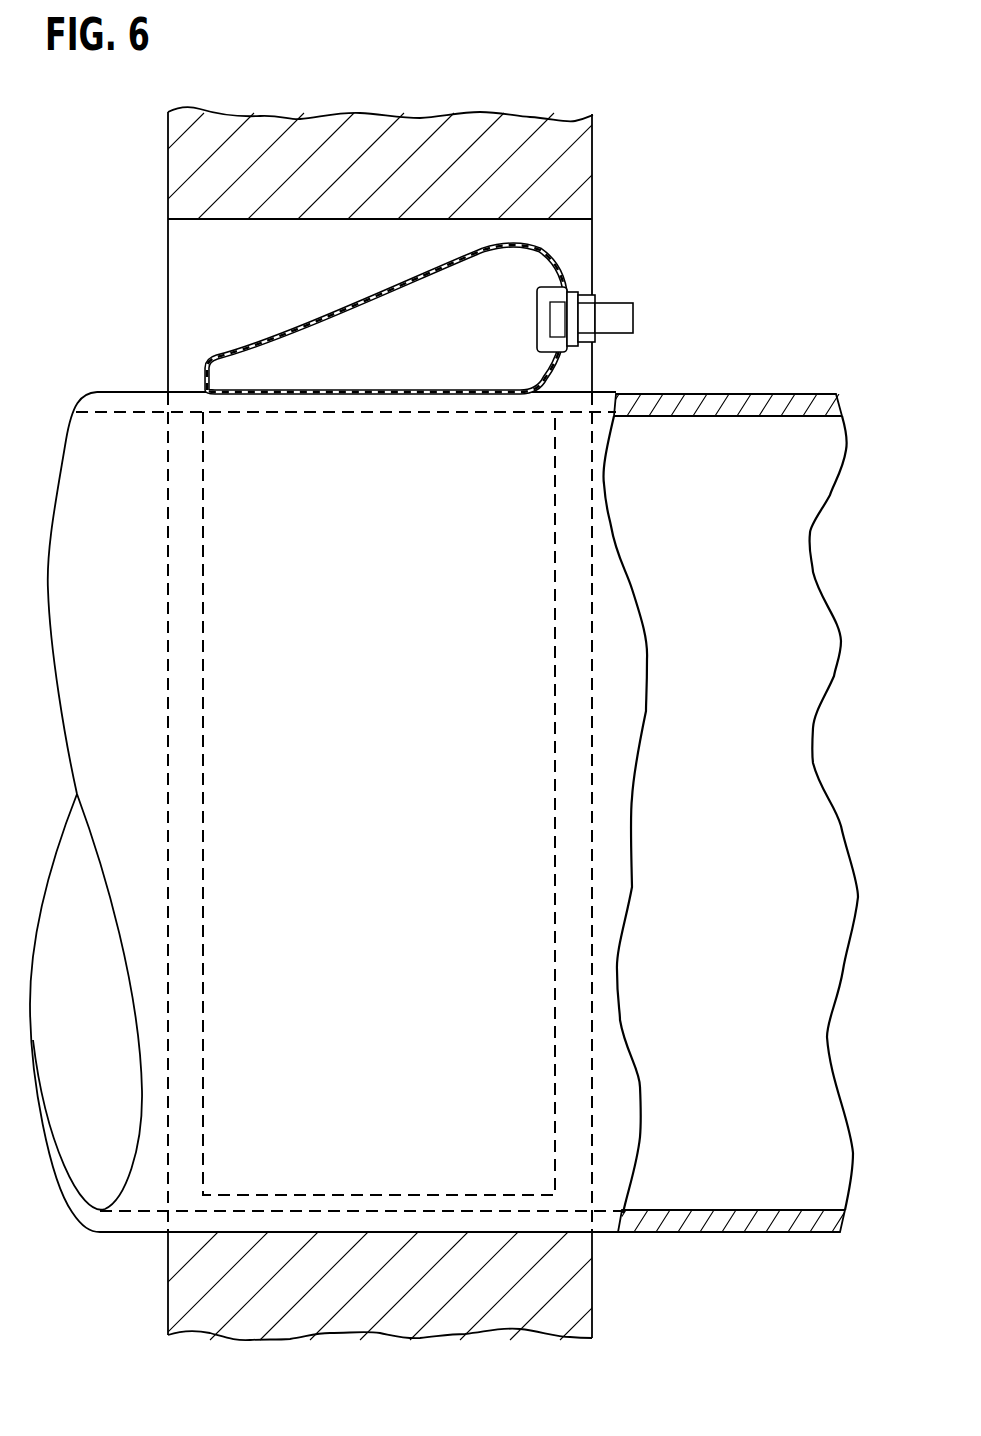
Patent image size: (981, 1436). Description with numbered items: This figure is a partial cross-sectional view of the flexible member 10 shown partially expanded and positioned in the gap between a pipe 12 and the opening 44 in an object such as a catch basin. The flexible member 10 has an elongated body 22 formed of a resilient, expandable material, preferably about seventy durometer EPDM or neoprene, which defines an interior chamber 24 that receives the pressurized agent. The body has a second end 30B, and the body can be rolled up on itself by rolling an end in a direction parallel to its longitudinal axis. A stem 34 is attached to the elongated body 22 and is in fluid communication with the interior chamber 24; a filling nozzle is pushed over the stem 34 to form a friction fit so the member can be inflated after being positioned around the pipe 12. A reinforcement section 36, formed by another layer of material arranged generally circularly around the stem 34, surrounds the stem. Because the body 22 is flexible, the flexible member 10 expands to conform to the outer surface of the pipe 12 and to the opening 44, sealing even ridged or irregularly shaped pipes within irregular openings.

The flexible member 10 is at (425, 280).
The pipe 12 is at (824, 393).
The elongated body 22 is at (520, 590).
The interior chamber 24 is at (250, 367).
The second end 30B is at (382, 1197).
The stem 34 is at (625, 305).
The reinforcement section 36 is at (553, 377).
The opening 44 is at (274, 280).